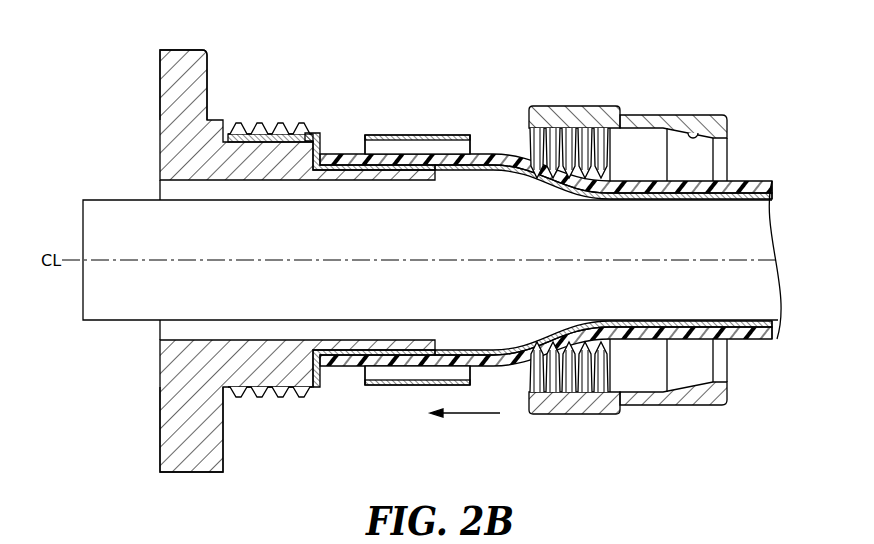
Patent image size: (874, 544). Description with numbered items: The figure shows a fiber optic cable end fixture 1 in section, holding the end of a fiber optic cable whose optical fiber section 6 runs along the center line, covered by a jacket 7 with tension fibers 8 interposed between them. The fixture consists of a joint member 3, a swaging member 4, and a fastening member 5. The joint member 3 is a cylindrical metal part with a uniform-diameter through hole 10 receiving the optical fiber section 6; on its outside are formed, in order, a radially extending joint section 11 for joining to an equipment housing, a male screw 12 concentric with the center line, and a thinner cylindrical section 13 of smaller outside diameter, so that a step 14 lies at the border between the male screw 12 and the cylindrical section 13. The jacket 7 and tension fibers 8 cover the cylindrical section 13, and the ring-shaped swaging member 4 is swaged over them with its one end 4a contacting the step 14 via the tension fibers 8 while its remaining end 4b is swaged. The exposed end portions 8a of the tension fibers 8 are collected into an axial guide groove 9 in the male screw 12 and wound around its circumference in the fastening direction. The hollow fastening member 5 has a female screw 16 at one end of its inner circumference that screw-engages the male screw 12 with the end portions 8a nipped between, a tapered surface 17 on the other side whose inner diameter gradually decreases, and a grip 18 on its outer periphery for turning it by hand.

The fiber optic cable end fixture 1 is at (447, 240).
The joint member 3 is at (274, 240).
The swaging member 4 is at (425, 229).
The one end of the swaging member 4a is at (367, 135).
The remaining end of the swaging member 4b is at (469, 135).
The fastening member 5 is at (673, 229).
The optical fiber section 6 is at (104, 200).
The jacket 7 is at (770, 181).
The tension fibers 8 is at (739, 181).
The end portions of the tension fibers 8a is at (283, 397).
The guide groove 9 is at (238, 125).
The through hole 10 is at (160, 192).
The joint section 11 is at (185, 50).
The male screw 12 is at (283, 134).
The cylindrical section 13 is at (420, 158).
The step 14 is at (314, 134).
The female screw 16 is at (540, 138).
The tapered surface 17 is at (694, 132).
The grip 18 is at (553, 236).